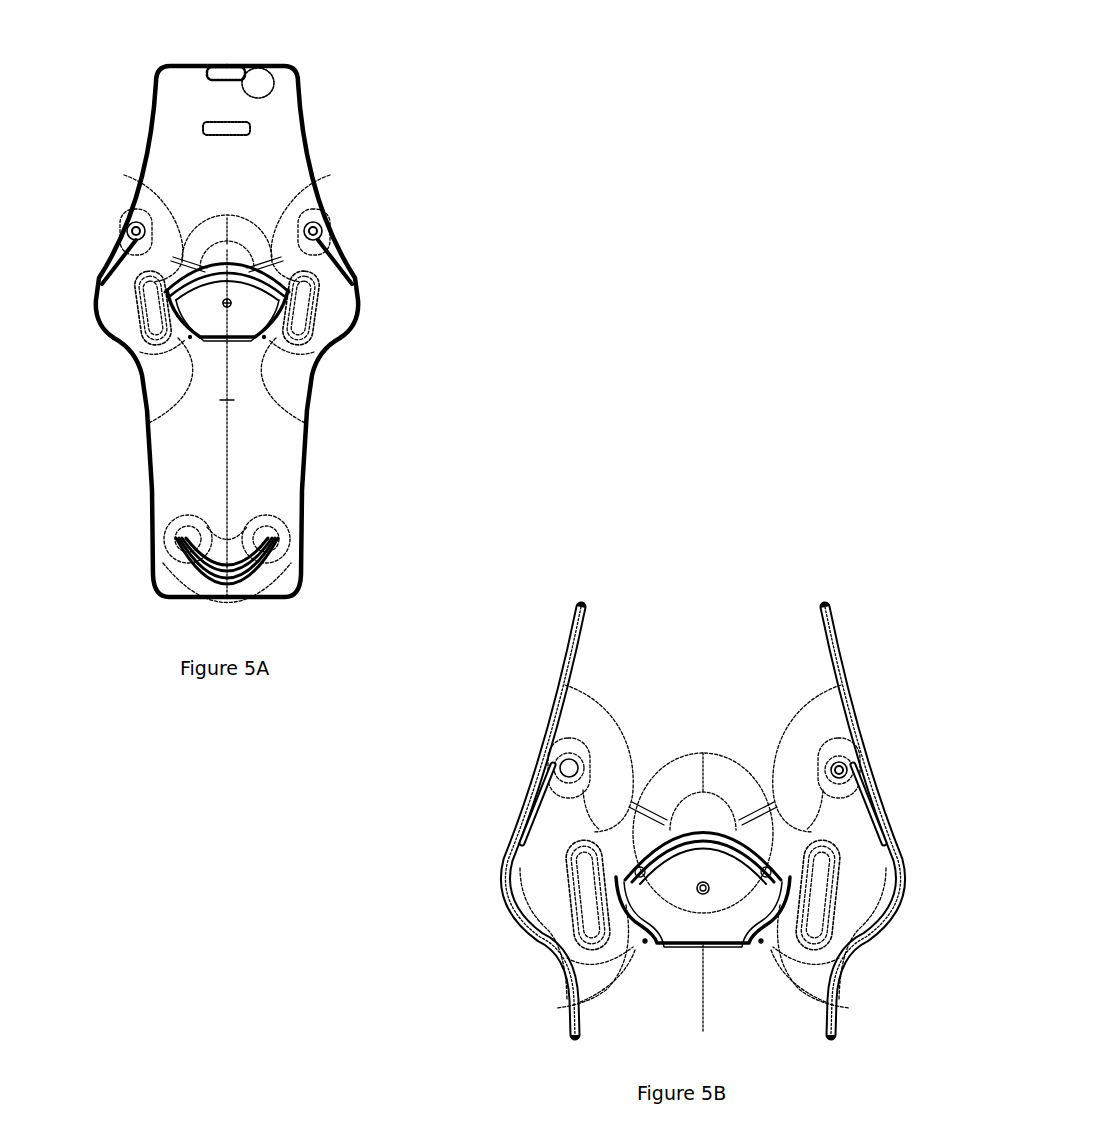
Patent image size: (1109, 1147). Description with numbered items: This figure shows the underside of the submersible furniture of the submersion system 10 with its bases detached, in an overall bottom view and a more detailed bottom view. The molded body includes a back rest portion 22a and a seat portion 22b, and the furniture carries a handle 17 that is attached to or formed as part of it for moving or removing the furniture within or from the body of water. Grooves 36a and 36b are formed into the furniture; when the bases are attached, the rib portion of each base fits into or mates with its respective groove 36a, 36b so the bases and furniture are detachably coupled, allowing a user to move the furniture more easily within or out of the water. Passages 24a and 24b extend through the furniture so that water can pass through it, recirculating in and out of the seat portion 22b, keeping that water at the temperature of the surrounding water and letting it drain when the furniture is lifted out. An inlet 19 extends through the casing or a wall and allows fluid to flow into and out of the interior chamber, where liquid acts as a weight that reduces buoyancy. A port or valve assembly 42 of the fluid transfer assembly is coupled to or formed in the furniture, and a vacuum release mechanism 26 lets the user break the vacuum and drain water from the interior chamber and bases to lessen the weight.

In FIG. 5A, the submersion system 10 is at (362, 94).
In FIG. 5A, the handle 17 is at (271, 76).
In FIG. 5A, the inlet 19 is at (196, 342).
In FIG. 5B, the inlet 19 is at (731, 953).
In FIG. 5A, the back rest portion 22a is at (270, 180).
In FIG. 5B, the back rest portion 22a is at (590, 650).
In FIG. 5A, the seat portion 22b is at (245, 335).
In FIG. 5B, the seat portion 22b is at (690, 947).
In FIG. 5B, the passage 24a is at (835, 910).
In FIG. 5A, the passage 24b is at (150, 347).
In FIG. 5A, the vacuum release mechanism 26 is at (128, 223).
In FIG. 5B, the groove 36a is at (690, 843).
In FIG. 5A, the groove 36b is at (277, 550).
In FIG. 5A, the port or valve assembly 42 is at (337, 243).
In FIG. 5B, the port or valve assembly 42 is at (855, 760).